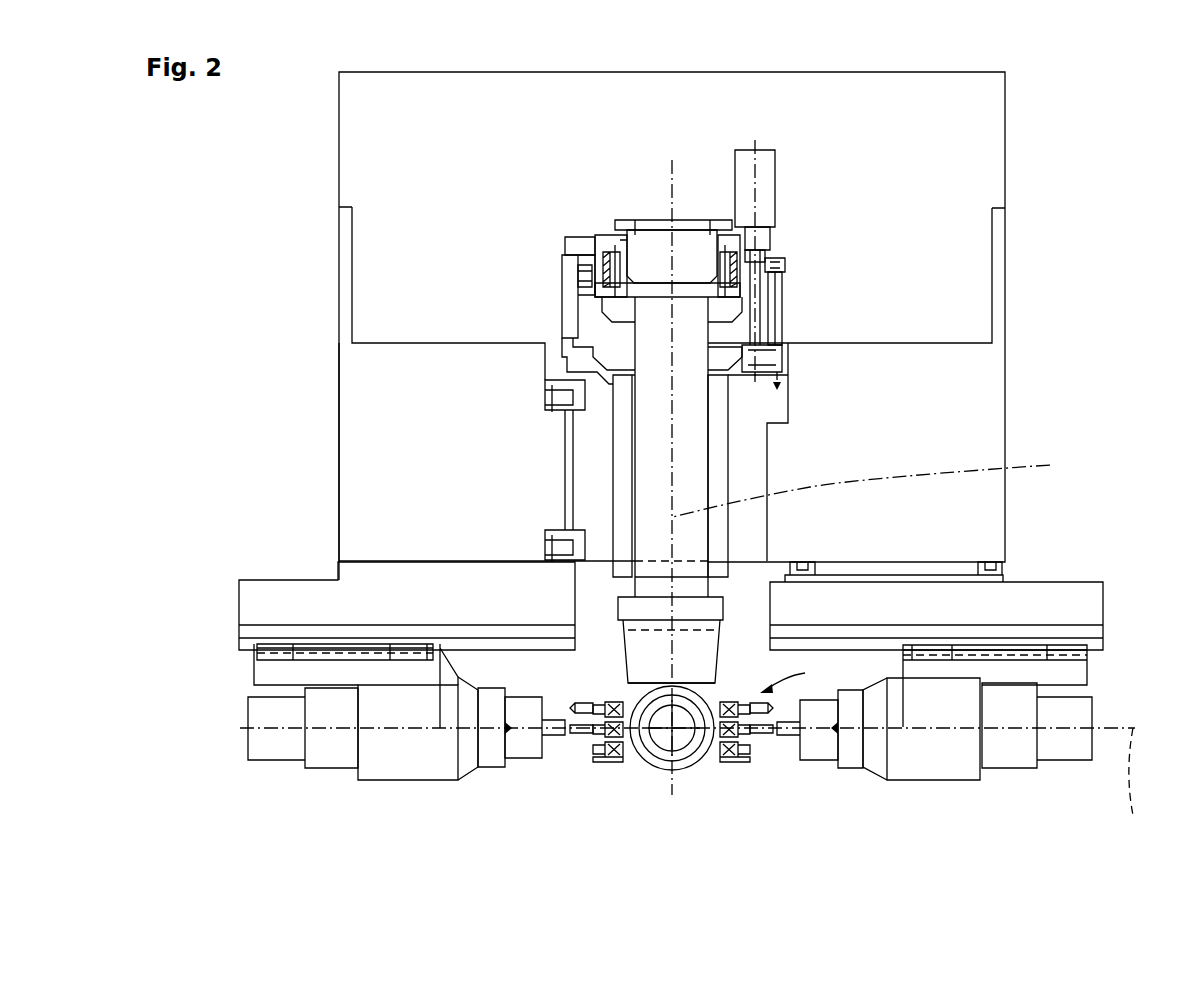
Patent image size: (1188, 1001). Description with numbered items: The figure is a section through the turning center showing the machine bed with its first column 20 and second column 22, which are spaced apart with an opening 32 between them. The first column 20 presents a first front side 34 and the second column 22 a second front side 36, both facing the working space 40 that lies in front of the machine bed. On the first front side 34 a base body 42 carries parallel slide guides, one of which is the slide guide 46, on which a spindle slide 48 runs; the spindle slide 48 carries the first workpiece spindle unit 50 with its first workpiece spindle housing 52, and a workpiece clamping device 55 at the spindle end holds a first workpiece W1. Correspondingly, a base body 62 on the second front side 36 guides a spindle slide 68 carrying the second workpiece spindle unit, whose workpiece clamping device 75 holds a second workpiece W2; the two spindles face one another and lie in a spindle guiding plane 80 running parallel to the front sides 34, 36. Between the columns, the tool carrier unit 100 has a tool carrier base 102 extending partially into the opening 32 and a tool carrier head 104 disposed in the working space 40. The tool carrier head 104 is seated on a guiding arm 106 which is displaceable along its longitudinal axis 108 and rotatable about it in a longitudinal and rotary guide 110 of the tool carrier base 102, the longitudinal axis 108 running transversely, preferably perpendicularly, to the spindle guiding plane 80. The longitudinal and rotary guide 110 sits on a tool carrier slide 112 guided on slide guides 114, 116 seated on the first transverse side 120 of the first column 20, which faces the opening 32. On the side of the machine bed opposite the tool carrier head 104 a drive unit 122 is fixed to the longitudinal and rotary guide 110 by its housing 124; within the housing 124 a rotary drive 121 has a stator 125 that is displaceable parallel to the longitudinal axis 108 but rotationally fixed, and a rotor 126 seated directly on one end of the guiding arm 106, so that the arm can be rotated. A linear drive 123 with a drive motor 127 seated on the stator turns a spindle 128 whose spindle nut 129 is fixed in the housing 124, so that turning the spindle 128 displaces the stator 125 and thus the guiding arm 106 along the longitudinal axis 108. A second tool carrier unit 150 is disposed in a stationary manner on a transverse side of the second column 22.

The first column 20 is at (384, 505).
The second column 22 is at (979, 448).
The opening 32 is at (748, 450).
The first front side 34 is at (397, 563).
The second front side 36 is at (933, 567).
The working space 40 is at (838, 752).
The base body 42 is at (272, 617).
The slide guide 46 is at (262, 648).
The spindle slide 48 is at (273, 678).
The first workpiece spindle unit 50 is at (398, 748).
The first workpiece spindle housing 52 is at (443, 763).
The workpiece clamping device 55 is at (548, 757).
The base body 62 is at (1070, 615).
The spindle slide 68 is at (1070, 670).
The workpiece clamping device 75 is at (803, 752).
The spindle guiding plane 80 is at (1129, 790).
The tool carrier unit 100 is at (673, 776).
The tool carrier base 102 is at (730, 420).
The tool carrier head 104 is at (707, 767).
The guiding arm 106 is at (690, 548).
The longitudinal axis 108 is at (883, 482).
The longitudinal and rotary guide 110 is at (718, 554).
The tool carrier slide 112 is at (597, 435).
The slide guide 114 is at (567, 548).
The slide guide 116 is at (565, 392).
The first transverse side 120 is at (563, 472).
The rotary drive 121 is at (688, 243).
The drive unit 122 is at (655, 221).
The linear drive 123 is at (777, 265).
The housing 124 is at (600, 342).
The stator 125 is at (600, 238).
The rotor 126 is at (777, 258).
The drive motor 127 is at (765, 173).
The spindle 128 is at (762, 325).
The spindle nut 129 is at (766, 348).
The second tool carrier unit 150 is at (638, 765).
The first workpiece W1 is at (580, 745).
The second workpiece W2 is at (790, 742).